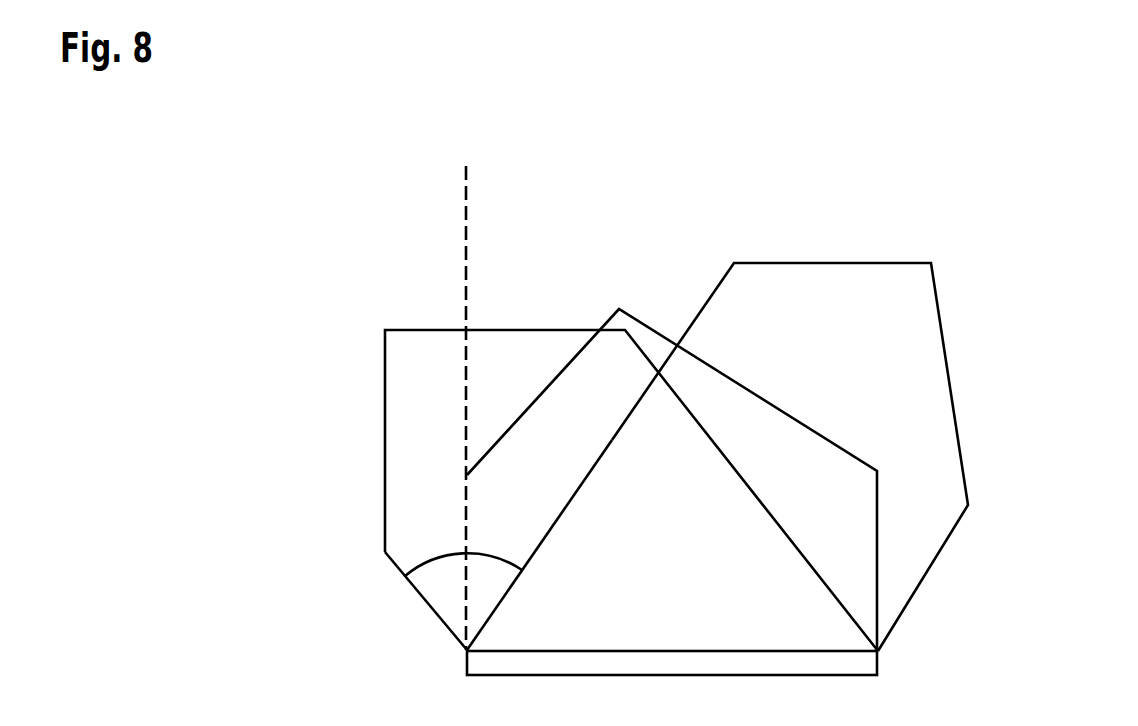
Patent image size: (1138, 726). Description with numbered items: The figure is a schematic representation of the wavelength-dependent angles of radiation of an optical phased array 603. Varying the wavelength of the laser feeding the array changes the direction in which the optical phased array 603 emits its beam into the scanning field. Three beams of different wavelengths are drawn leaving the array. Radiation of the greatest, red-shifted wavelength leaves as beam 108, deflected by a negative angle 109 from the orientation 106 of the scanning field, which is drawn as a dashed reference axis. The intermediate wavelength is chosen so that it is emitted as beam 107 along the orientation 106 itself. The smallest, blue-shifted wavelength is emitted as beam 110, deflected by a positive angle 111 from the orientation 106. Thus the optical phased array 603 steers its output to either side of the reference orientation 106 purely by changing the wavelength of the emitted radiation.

The orientation of scanning field 106 is at (466, 203).
The beam 107 is at (623, 305).
The beam 108 is at (950, 372).
The negative angle 109 is at (490, 596).
The beam 110 is at (385, 430).
The positive angle 111 is at (440, 594).
The optical phased array 603 is at (877, 661).